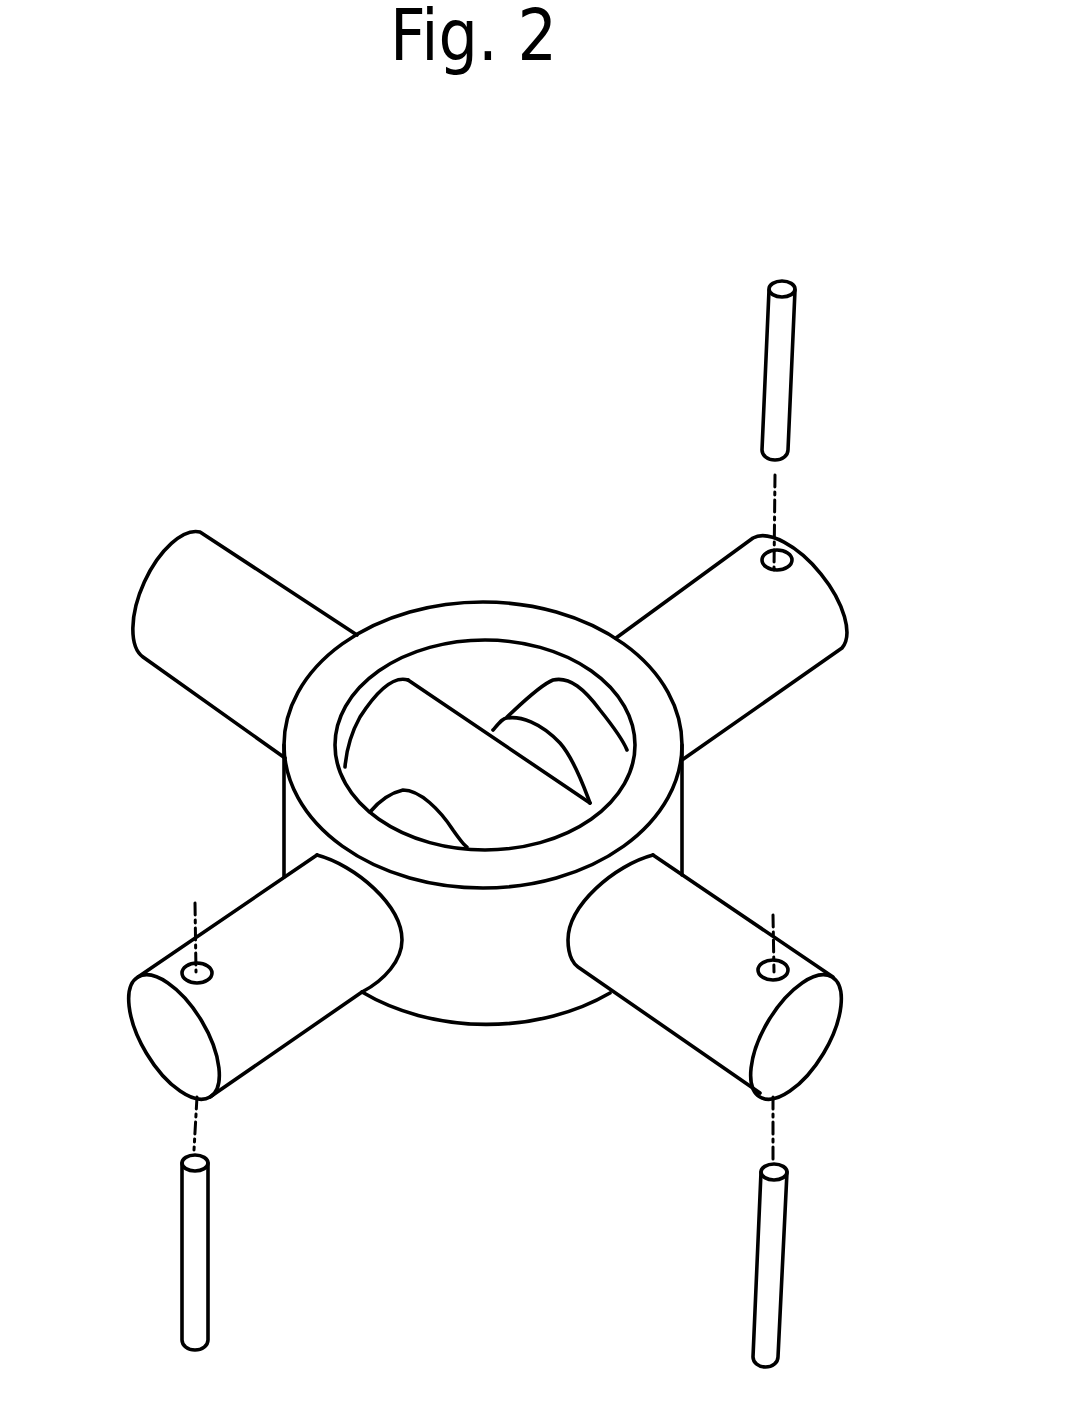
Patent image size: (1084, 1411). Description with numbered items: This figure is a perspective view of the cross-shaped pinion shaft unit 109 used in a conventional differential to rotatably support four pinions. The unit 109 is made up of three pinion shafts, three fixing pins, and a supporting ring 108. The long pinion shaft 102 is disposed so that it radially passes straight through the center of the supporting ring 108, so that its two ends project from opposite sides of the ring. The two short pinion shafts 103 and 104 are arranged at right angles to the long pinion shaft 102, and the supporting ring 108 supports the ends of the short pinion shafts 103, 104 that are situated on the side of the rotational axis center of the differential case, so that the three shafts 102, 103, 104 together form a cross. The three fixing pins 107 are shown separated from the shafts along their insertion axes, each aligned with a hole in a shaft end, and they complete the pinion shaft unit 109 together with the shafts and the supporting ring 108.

The long pinion shaft 102 is at (215, 663).
The short pinion shaft 103 is at (292, 1003).
The short pinion shaft 104 is at (763, 662).
The fixing pin 107 is at (783, 357).
The supporting ring 108 is at (507, 623).
The pinion shaft unit 109 is at (420, 430).